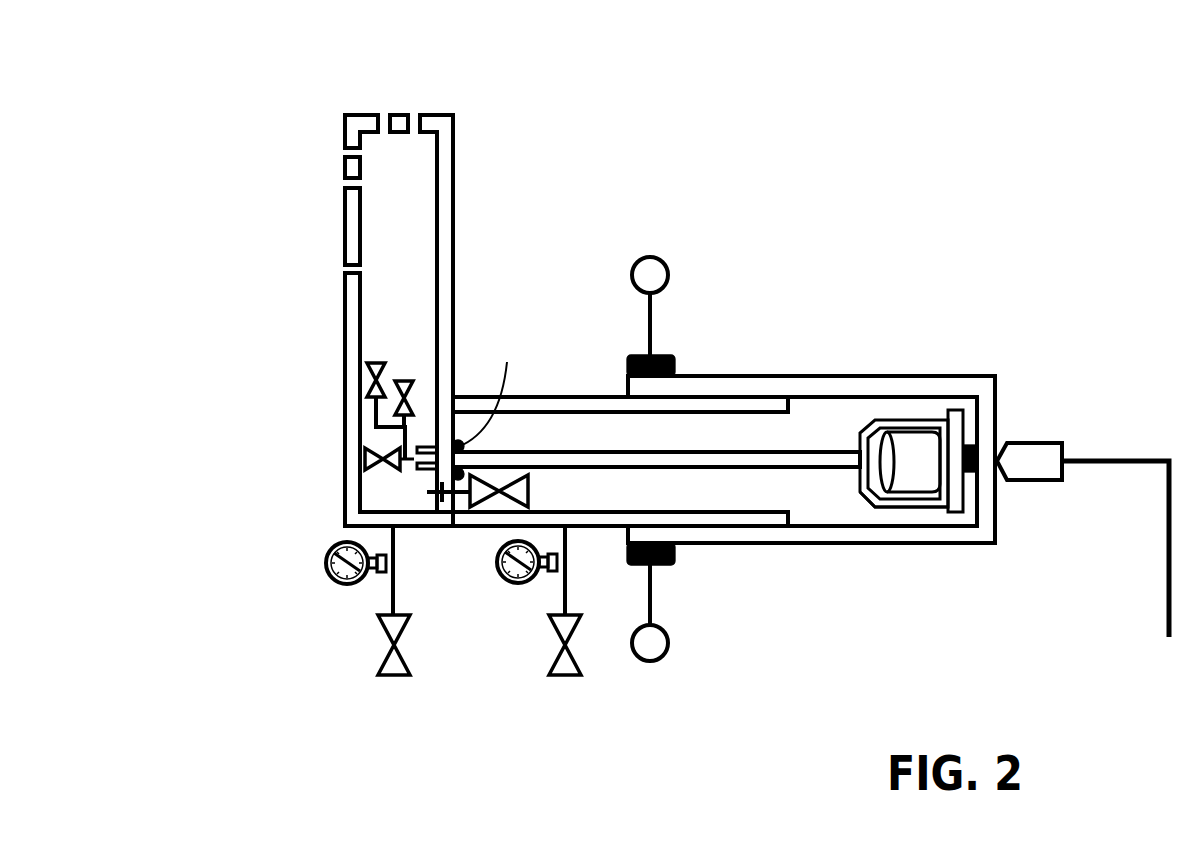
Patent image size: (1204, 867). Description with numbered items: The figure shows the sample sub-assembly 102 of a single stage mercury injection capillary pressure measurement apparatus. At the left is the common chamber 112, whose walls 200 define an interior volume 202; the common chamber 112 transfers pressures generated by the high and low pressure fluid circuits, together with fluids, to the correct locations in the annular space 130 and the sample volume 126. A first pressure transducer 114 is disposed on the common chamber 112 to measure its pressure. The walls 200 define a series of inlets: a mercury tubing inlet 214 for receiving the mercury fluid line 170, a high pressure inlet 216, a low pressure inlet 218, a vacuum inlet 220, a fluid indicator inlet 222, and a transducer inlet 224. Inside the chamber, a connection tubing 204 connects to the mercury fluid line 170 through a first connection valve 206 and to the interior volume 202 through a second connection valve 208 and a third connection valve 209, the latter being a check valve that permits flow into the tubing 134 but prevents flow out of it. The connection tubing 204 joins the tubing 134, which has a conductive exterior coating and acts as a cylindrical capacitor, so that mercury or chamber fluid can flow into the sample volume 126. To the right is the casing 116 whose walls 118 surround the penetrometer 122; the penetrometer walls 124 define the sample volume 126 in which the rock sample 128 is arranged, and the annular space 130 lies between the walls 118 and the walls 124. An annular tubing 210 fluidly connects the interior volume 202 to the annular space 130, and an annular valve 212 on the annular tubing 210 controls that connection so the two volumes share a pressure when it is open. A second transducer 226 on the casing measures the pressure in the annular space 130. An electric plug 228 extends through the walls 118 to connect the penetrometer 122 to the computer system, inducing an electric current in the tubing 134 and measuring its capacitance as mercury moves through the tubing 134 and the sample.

The sample sub-assembly 102 is at (115, 327).
The common chamber 112 is at (333, 222).
The first pressure transducer 114 is at (352, 583).
The casing 116 is at (807, 383).
The walls 118 is at (480, 527).
The penetrometer 122 is at (893, 405).
The walls 124 is at (930, 417).
The sample volume 126 is at (932, 510).
The rock sample 128 is at (905, 480).
The annular space 130 is at (738, 428).
The tubing 134 is at (562, 452).
The mercury fluid line 170 is at (357, 478).
The walls 200 is at (452, 215).
The interior volume 202 is at (393, 343).
The connection tubing 204 is at (407, 477).
The first connection valve 206 is at (365, 452).
The second connection valve 208 is at (393, 362).
The third connection valve 209 is at (417, 385).
The annular tubing 210 is at (455, 527).
The annular valve 212 is at (528, 483).
The mercury tubing inlet 214 is at (417, 466).
The high pressure inlet 216 is at (350, 267).
The low pressure inlet 218 is at (345, 147).
The vacuum inlet 220 is at (345, 180).
The fluid indicator inlet 222 is at (385, 113).
The transducer inlet 224 is at (413, 115).
The second transducer 226 is at (517, 585).
The electric plug 228 is at (1040, 442).